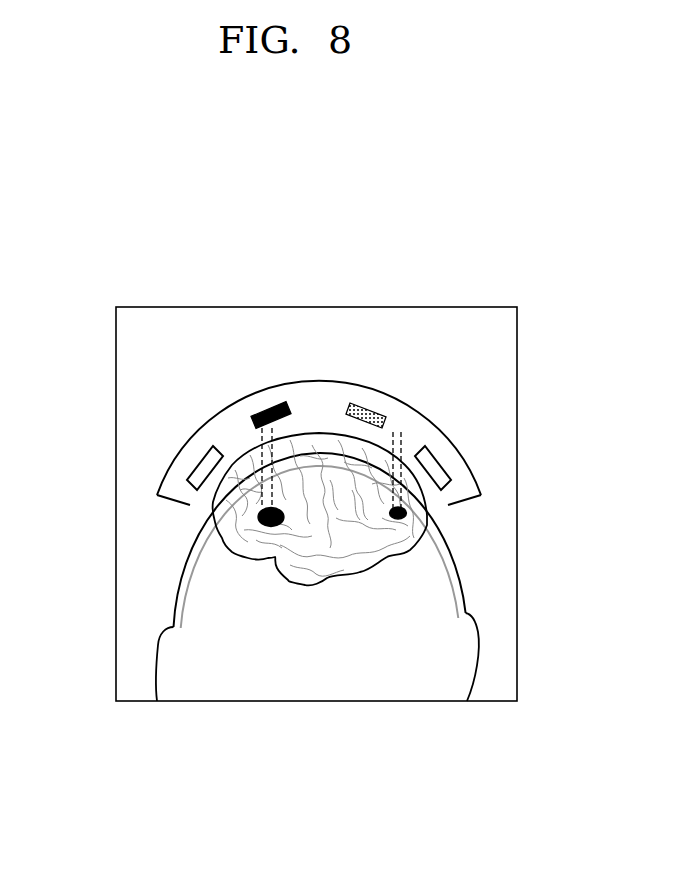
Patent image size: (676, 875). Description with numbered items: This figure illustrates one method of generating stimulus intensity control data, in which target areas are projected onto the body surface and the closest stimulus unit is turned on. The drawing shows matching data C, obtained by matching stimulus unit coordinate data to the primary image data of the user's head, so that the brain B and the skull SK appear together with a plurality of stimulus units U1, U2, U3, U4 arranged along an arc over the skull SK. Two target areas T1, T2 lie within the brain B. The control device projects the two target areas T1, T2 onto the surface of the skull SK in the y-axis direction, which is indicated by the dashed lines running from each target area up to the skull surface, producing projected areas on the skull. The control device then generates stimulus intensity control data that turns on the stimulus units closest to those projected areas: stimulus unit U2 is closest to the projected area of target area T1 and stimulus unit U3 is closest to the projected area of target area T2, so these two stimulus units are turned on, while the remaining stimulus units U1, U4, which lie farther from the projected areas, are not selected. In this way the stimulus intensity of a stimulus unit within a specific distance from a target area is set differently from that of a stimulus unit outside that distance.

The matching data C is at (453, 307).
The skull SK is at (172, 598).
The brain B is at (316, 584).
The stimulus unit U1 is at (199, 466).
The stimulus unit U2 is at (273, 410).
The stimulus unit U3 is at (368, 403).
The stimulus unit U4 is at (446, 463).
The target area T1 is at (258, 519).
The target area T2 is at (405, 516).